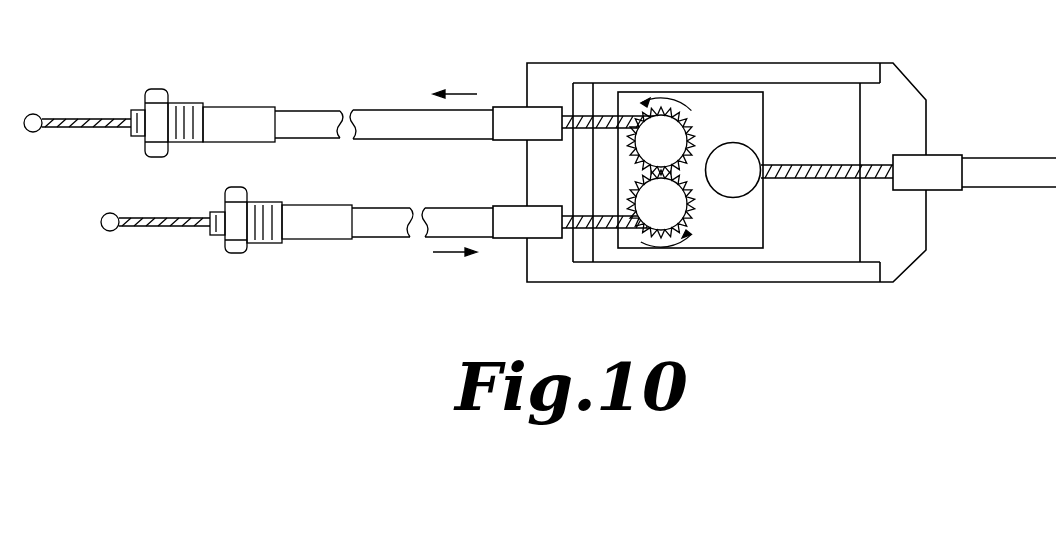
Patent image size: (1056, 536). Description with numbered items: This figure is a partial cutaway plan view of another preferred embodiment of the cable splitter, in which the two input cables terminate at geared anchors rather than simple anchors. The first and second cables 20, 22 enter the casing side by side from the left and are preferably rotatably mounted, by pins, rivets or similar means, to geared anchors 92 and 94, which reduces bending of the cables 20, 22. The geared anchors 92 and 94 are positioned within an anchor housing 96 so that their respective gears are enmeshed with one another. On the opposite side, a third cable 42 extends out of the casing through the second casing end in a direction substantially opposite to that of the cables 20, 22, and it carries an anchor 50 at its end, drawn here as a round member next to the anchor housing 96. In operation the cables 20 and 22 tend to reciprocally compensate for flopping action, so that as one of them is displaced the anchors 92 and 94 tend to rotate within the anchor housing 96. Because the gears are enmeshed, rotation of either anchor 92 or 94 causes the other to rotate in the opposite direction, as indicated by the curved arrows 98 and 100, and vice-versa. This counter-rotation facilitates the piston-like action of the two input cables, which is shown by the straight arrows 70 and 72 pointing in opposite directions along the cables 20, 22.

The first cable 20 is at (585, 225).
The second cable 22 is at (585, 122).
The third cable 42 is at (876, 170).
The anchor 50 is at (748, 163).
The arrow 70 is at (455, 80).
The arrow 72 is at (453, 266).
The geared anchor 92 is at (668, 205).
The geared anchor 94 is at (665, 125).
The anchor housing 96 is at (752, 100).
The arrow 98 is at (672, 242).
The arrow 100 is at (683, 102).